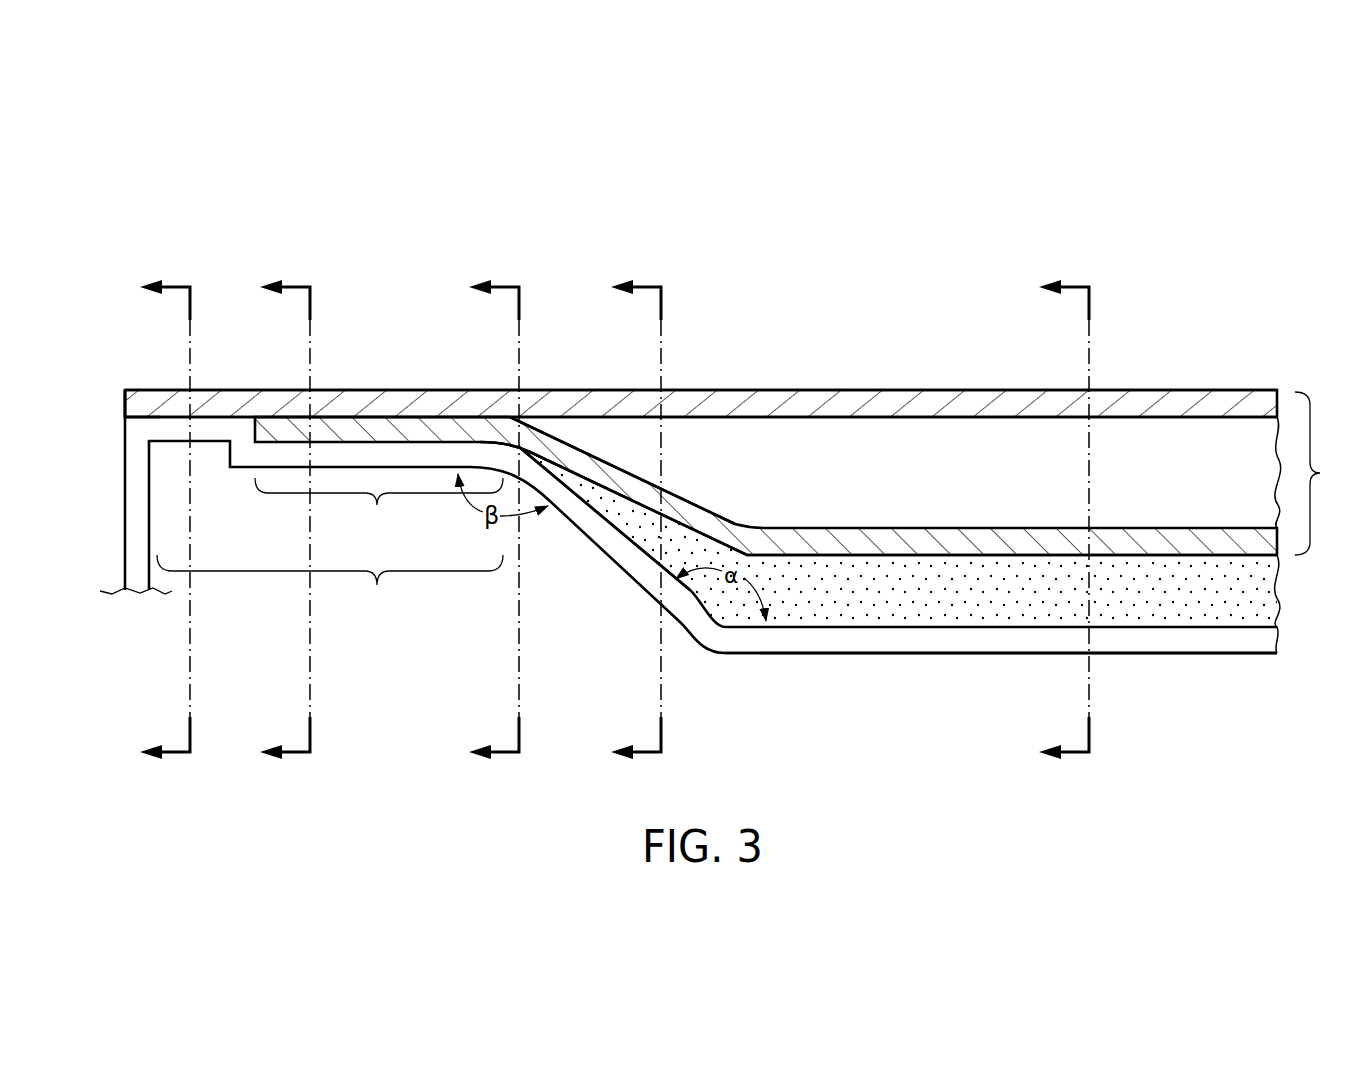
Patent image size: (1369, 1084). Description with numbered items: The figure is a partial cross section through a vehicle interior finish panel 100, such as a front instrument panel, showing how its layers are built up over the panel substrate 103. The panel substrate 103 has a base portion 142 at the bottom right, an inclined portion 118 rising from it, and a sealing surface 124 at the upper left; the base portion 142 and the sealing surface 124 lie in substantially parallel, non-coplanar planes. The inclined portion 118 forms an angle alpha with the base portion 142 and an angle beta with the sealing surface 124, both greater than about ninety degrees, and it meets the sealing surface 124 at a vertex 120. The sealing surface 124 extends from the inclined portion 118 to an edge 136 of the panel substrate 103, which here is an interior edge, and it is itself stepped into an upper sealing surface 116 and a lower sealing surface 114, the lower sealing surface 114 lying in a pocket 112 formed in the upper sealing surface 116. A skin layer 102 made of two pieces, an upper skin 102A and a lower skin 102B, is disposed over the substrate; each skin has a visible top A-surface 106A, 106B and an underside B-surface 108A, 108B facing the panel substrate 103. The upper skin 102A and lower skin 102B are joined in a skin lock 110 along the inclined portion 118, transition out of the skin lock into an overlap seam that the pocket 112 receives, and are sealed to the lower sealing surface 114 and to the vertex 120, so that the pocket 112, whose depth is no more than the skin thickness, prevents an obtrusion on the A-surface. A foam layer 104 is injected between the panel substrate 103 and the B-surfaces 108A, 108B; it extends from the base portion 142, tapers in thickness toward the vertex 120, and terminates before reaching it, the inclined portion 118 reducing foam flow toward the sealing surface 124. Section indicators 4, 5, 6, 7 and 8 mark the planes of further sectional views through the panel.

The finish panel 100 is at (858, 245).
The skin layer 102 is at (910, 378).
The upper skin 102A is at (1197, 380).
The lower skin 102B is at (905, 560).
The panel substrate 103 is at (1135, 665).
The foam layer 104 is at (1268, 593).
The A-surface of upper skin 106A is at (768, 390).
The A-surface of lower skin 106B is at (887, 527).
The B-surface of upper skin 108A is at (810, 420).
The B-surface of lower skin 108B is at (950, 573).
The skin lock 110 is at (1320, 473).
The pocket 112 is at (379, 512).
The lower sealing surface 114 is at (373, 442).
The upper sealing surface 116 is at (153, 415).
The inclined portion 118 is at (623, 540).
The vertex 120 is at (530, 447).
The sealing surface 124 is at (330, 589).
The edge 136 is at (125, 448).
The base portion 142 is at (1245, 653).
The section line 4- 4 is at (147, 521).
The section line 5- 5 is at (267, 521).
The section line 6- 6 is at (476, 521).
The section line 7- 7 is at (618, 521).
The section line 8- 8 is at (1046, 521).